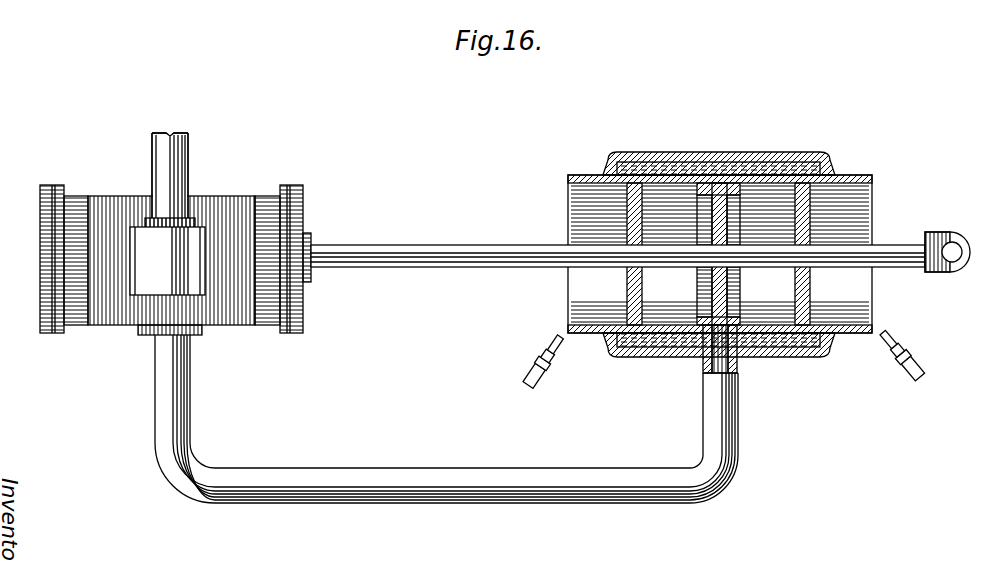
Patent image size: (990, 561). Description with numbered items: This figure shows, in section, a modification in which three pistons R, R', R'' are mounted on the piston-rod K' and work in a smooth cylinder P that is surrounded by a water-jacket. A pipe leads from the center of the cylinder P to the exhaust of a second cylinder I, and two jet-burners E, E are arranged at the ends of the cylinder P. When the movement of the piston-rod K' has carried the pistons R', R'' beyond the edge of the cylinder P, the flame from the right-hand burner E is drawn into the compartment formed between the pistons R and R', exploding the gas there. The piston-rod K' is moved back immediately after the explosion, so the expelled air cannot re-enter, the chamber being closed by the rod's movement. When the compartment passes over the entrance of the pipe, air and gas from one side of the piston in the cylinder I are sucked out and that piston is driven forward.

The cylinder I is at (175, 234).
The piston-rod K' is at (640, 244).
The cylinder P is at (720, 255).
The piston R is at (669, 254).
The piston R' is at (765, 254).
The piston R'' is at (839, 254).
The jet-burner E is at (723, 356).